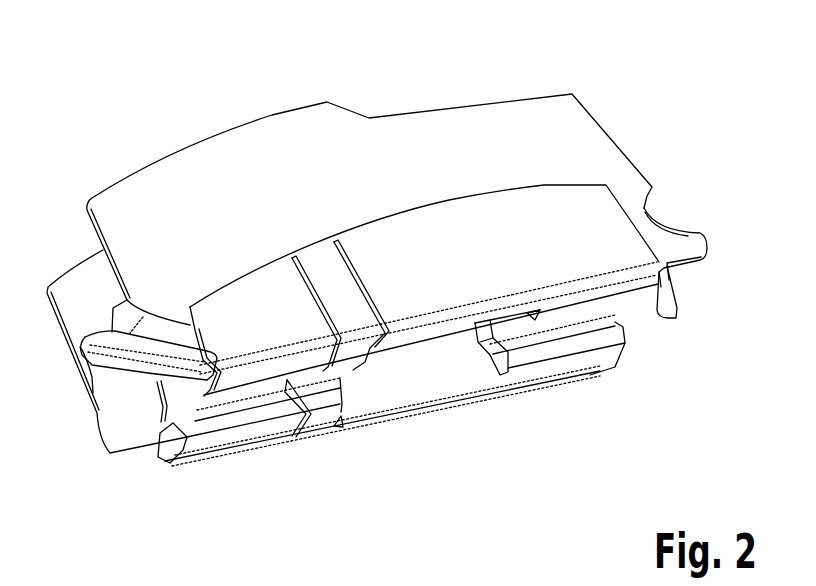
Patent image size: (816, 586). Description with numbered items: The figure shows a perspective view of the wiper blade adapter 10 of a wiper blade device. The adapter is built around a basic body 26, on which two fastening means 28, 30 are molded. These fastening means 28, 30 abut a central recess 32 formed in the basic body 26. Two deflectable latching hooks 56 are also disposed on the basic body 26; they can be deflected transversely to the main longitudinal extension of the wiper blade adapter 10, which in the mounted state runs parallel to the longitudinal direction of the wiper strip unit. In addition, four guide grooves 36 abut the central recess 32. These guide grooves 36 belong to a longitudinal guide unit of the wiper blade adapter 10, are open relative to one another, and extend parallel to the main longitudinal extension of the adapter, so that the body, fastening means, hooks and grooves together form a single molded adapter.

The wiper blade adapter 10 is at (118, 103).
The basic body 26 is at (200, 160).
The fastening means 28 is at (237, 380).
The fastening means 30 is at (568, 305).
The central recess 32 is at (430, 372).
The guide grooves 36 is at (162, 462).
The latching hooks 56 is at (343, 357).